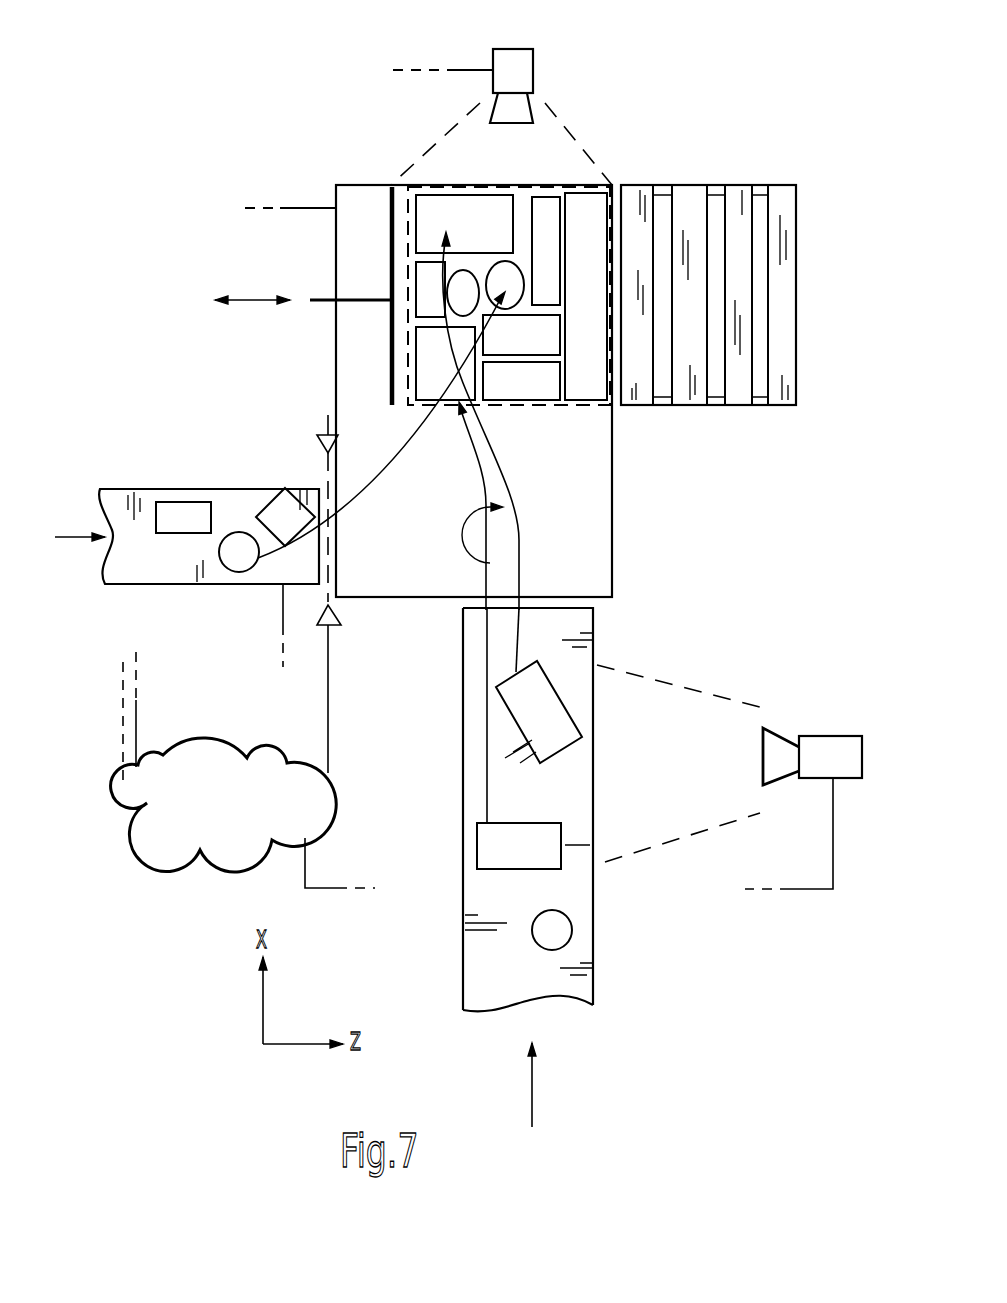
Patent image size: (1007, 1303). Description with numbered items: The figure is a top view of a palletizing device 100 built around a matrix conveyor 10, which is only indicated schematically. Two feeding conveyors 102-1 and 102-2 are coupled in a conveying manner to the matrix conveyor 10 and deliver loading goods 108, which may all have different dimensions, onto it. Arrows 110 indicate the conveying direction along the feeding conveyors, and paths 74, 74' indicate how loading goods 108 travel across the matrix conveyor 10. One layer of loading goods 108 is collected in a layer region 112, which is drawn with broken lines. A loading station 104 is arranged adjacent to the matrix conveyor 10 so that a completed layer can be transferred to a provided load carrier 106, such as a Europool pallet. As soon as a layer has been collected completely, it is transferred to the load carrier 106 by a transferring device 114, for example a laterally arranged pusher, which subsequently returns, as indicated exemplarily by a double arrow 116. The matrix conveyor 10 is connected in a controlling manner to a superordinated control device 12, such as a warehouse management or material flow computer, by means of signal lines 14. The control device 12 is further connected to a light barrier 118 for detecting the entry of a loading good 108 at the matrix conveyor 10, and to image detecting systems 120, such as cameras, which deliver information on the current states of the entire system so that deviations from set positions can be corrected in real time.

The palletizing device 100 is at (177, 172).
The matrix conveyor 10 is at (615, 516).
The superordinated control device 12 is at (243, 815).
The signal lines 14 is at (440, 68).
The transport path 74 is at (416, 527).
The transport path (rotated) 74' is at (454, 565).
The feeding conveyor 102-1 is at (463, 978).
The feeding conveyor 102-2 is at (141, 489).
The loading station 104 is at (703, 160).
The load carrier 106 is at (797, 336).
The loading goods 108 is at (493, 237).
The conveying direction 110 is at (80, 535).
The layer region 112 is at (584, 412).
The transferring device 114 is at (363, 297).
The double arrow 116 is at (253, 302).
The light barrier 118 is at (340, 618).
The image detecting system 120 is at (535, 75).